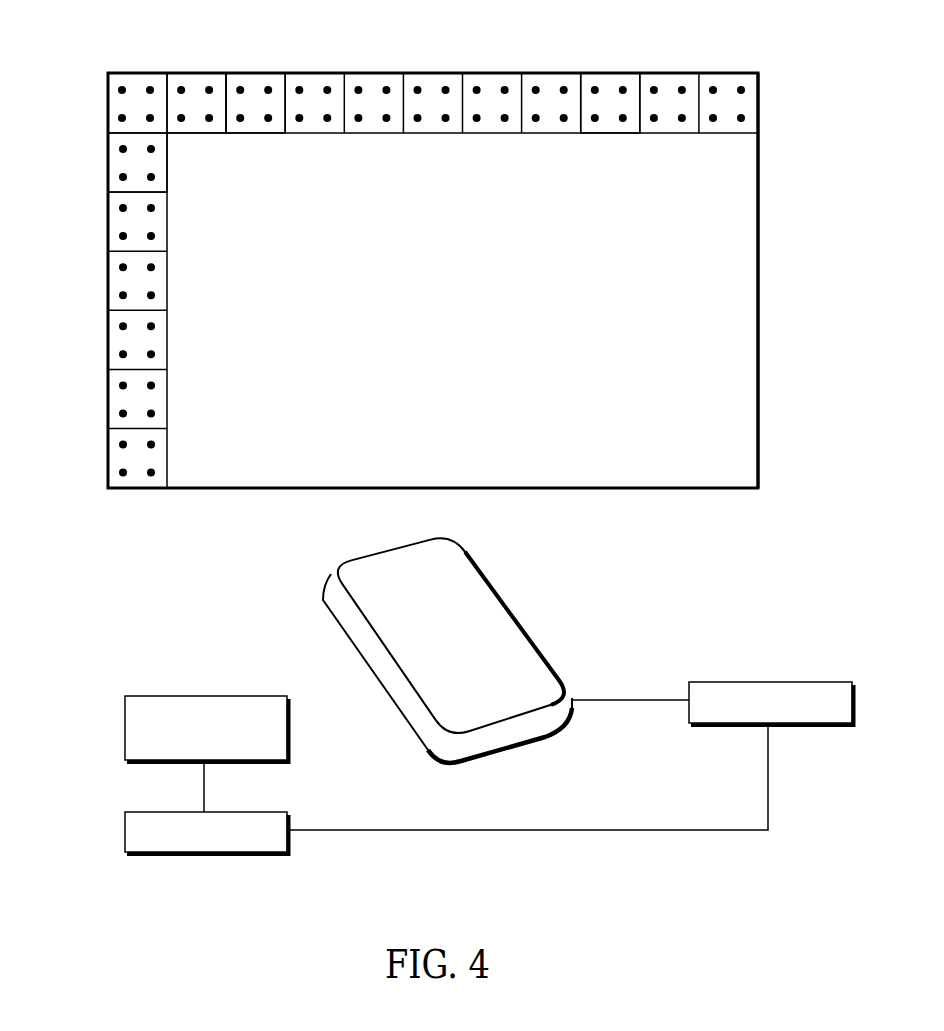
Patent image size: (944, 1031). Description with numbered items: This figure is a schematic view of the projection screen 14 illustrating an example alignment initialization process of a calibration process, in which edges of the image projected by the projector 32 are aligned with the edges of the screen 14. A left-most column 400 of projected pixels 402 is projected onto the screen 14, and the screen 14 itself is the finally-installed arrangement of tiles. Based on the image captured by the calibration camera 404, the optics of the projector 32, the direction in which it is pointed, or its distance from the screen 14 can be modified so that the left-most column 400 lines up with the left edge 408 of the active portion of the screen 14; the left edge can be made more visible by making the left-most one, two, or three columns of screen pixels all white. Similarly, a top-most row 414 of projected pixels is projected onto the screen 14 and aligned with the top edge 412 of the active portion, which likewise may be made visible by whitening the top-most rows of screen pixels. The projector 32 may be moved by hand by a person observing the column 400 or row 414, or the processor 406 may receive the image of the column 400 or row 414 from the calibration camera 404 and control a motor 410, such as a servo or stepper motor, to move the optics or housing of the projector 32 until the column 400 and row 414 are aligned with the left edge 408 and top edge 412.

The screen 14 is at (726, 73).
The projector 32 is at (521, 621).
The left-most column 400 is at (203, 73).
The projected pixels 402 is at (272, 73).
The calibration camera 404 is at (125, 726).
The processor 406 is at (125, 838).
The left edge 408 is at (107, 165).
The motor 410 is at (770, 682).
The top edge 412 is at (611, 73).
The top-most row 414 is at (762, 107).